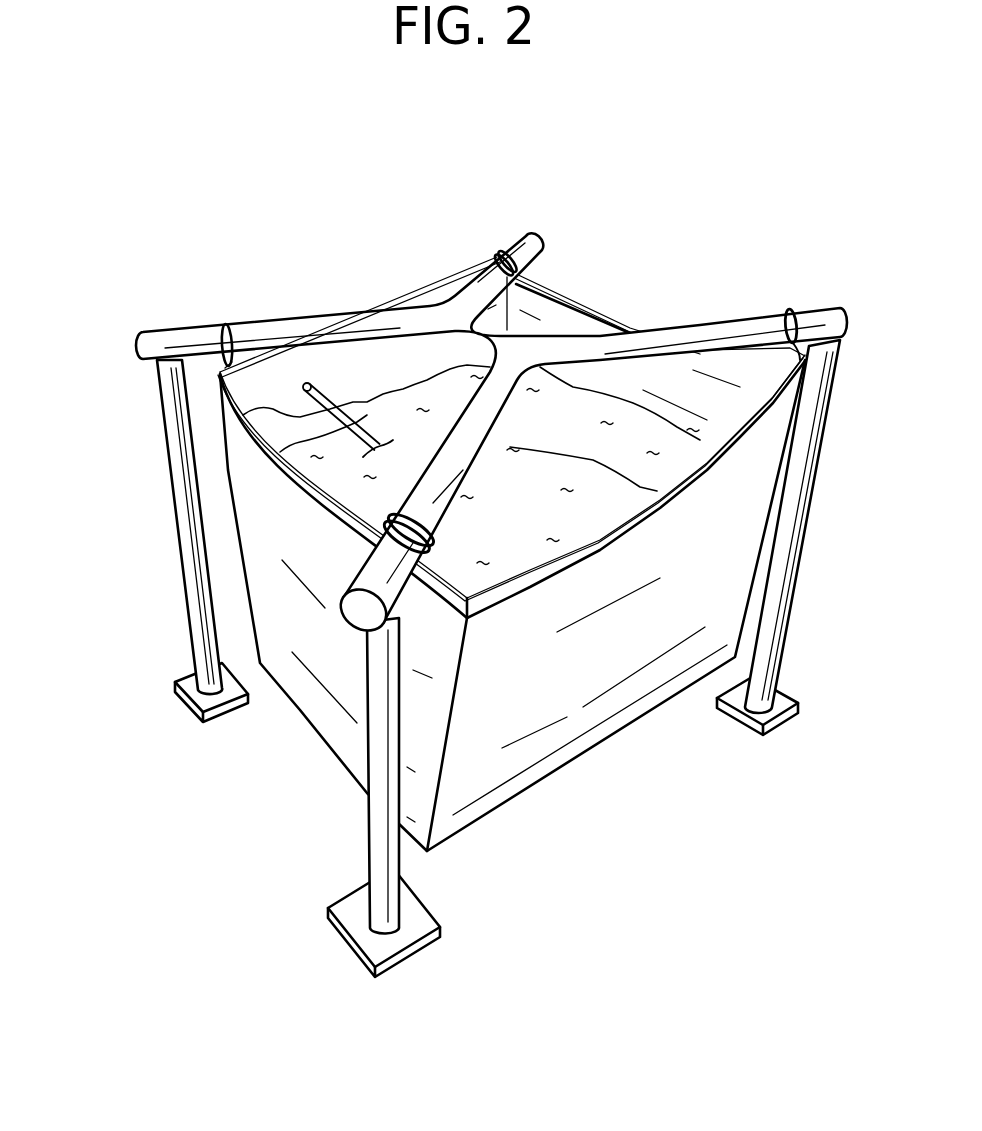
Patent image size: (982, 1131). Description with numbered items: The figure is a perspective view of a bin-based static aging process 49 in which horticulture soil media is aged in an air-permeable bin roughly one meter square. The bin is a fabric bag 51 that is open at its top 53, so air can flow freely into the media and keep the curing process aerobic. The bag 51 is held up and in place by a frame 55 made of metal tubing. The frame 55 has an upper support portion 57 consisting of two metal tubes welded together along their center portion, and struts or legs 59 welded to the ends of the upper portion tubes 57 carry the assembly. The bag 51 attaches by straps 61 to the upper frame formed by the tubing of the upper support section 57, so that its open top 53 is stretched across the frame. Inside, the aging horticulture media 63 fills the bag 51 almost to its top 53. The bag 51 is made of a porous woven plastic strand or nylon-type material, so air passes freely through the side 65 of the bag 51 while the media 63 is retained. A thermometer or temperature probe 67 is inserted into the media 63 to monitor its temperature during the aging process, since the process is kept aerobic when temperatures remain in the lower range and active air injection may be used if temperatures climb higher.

The static aging process 49 is at (140, 266).
The bag 51 is at (664, 805).
The top 53 is at (597, 505).
The frame 55 is at (116, 347).
The upper support portion 57 is at (330, 320).
The legs 59 is at (168, 552).
The straps 61 is at (232, 330).
The horticulture media 63 is at (657, 491).
The side 65 is at (390, 355).
The temperature probe 67 is at (306, 395).